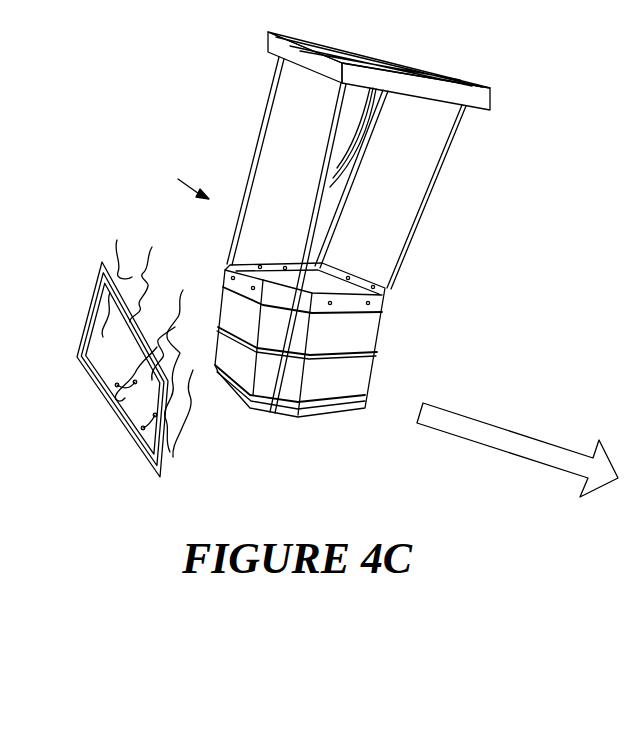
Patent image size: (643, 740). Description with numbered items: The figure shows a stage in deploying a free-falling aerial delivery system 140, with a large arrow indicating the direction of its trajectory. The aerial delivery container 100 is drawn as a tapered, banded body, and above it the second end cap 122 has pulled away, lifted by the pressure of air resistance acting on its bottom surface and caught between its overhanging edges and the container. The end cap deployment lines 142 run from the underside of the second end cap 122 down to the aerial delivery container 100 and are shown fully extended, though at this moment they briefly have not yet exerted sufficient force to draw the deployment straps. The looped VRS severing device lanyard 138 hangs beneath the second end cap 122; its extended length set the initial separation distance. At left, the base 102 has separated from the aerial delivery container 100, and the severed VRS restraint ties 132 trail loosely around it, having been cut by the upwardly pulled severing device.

The aerial delivery container 100 is at (377, 363).
The base 102 is at (150, 477).
The second end cap 122 is at (413, 63).
The VRS restraint ties 132 is at (125, 272).
The VRS severing device lanyard 138 is at (350, 162).
The aerial delivery system 140 is at (180, 174).
The end cap deployment lines 142 is at (259, 138).